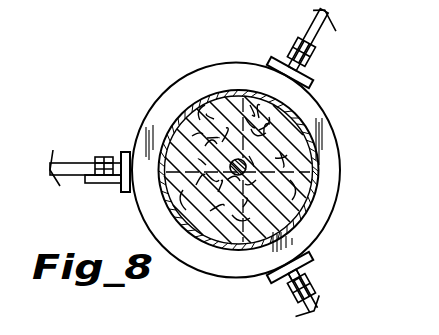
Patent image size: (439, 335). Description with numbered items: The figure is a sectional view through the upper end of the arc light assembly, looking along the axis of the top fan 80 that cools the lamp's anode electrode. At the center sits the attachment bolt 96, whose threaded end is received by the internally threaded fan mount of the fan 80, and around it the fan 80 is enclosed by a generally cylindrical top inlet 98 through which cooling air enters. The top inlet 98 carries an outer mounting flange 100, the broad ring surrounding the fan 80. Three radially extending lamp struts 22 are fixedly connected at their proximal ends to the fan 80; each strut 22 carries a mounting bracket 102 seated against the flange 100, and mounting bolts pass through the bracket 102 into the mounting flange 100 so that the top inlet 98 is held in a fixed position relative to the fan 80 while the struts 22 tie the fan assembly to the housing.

The lamp struts 22 is at (326, 36).
The top fan 80 is at (192, 236).
The attachment bolt 96 is at (240, 165).
The top inlet 98 is at (310, 176).
The mounting flange 100 is at (323, 210).
The mounting bracket 102 is at (277, 62).